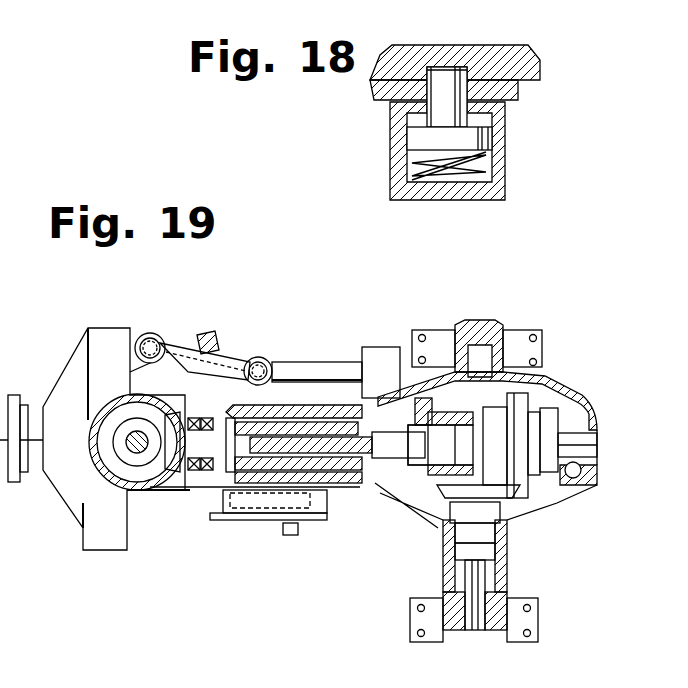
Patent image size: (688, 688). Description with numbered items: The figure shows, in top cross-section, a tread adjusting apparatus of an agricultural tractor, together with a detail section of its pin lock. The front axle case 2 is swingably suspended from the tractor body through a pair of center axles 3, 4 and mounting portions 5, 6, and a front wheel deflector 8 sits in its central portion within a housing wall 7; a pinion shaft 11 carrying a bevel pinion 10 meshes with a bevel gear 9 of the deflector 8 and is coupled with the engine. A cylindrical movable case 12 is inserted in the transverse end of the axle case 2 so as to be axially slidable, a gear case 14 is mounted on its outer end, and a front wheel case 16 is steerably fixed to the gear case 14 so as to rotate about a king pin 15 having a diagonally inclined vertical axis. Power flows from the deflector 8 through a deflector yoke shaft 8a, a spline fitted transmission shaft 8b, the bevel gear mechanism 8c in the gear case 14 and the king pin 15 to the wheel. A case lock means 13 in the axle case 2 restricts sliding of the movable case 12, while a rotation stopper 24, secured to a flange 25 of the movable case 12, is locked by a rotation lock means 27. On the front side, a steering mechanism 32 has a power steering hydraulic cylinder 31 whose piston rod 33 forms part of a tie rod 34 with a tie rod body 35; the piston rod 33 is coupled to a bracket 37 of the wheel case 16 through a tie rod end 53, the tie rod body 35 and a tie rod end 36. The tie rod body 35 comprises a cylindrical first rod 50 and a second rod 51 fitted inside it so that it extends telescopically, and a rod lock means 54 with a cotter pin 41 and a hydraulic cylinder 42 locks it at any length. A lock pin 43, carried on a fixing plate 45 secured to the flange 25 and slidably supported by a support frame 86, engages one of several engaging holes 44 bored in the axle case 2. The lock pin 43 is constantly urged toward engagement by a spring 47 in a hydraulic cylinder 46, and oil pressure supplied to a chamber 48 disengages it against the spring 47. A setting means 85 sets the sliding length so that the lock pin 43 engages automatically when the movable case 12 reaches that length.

In FIG. 18, the front axle case 2 is at (482, 72).
In FIG. 19, the front axle case 2 is at (362, 478).
In FIG. 19, the center axle 3 is at (498, 348).
In FIG. 19, the center axle 4 is at (500, 582).
In FIG. 19, the upper mounting bracket 5 is at (448, 340).
In FIG. 19, the lower mounting bracket 6 is at (452, 625).
In FIG. 19, the housing wall 7 is at (535, 505).
In FIG. 19, the front wheel deflector 8 is at (538, 398).
In FIG. 19, the deflector yoke shaft 8a is at (380, 462).
In FIG. 19, the transmission shaft 8b is at (340, 470).
In FIG. 19, the bevel gear mechanism 8c is at (168, 480).
In FIG. 19, the bevel gear 9 is at (516, 455).
In FIG. 19, the bevel pinion 10 is at (458, 498).
In FIG. 19, the pinion shaft 11 is at (500, 538).
In FIG. 19, the movable case 12 is at (328, 515).
In FIG. 19, the case lock means 13 is at (288, 408).
In FIG. 19, the gear case 14 is at (135, 492).
In FIG. 19, the king pin 15 is at (125, 448).
In FIG. 19, the front wheel case 16 is at (68, 410).
In FIG. 19, the rotation stopper 24 is at (285, 520).
In FIG. 19, the flange 25 is at (212, 514).
In FIG. 19, the rotation lock means 27 is at (252, 518).
In FIG. 19, the hydraulic cylinder 31 is at (372, 347).
In FIG. 19, the steering mechanism 32 is at (395, 347).
In FIG. 19, the piston rod 33 is at (335, 362).
In FIG. 19, the tie rod 34 is at (310, 327).
In FIG. 19, the tie rod body 35 is at (232, 358).
In FIG. 19, the tie rod end 36 is at (149, 333).
In FIG. 19, the bracket 37 is at (137, 340).
In FIG. 19, the cotter pin 41 is at (194, 350).
In FIG. 19, the hydraulic cylinder 42 is at (212, 350).
In FIG. 18, the lock pin 43 is at (456, 96).
In FIG. 19, the lock pin 43 is at (283, 518).
In FIG. 18, the engaging holes 44 is at (441, 80).
In FIG. 19, the engaging holes 44 is at (270, 520).
In FIG. 18, the fixing plate 45 is at (389, 104).
In FIG. 19, the fixing plate 45 is at (230, 518).
In FIG. 18, the hydraulic cylinder 46 is at (395, 172).
In FIG. 18, the spring 47 is at (452, 160).
In FIG. 18, the chamber 48 is at (486, 120).
In FIG. 19, the first rod 50 is at (246, 362).
In FIG. 19, the second rod 51 is at (178, 348).
In FIG. 19, the tie rod end 53 is at (270, 358).
In FIG. 19, the rod lock means 54 is at (210, 334).
In FIG. 19, the setting means 85 is at (291, 538).
In FIG. 19, the support frame 86 is at (300, 530).